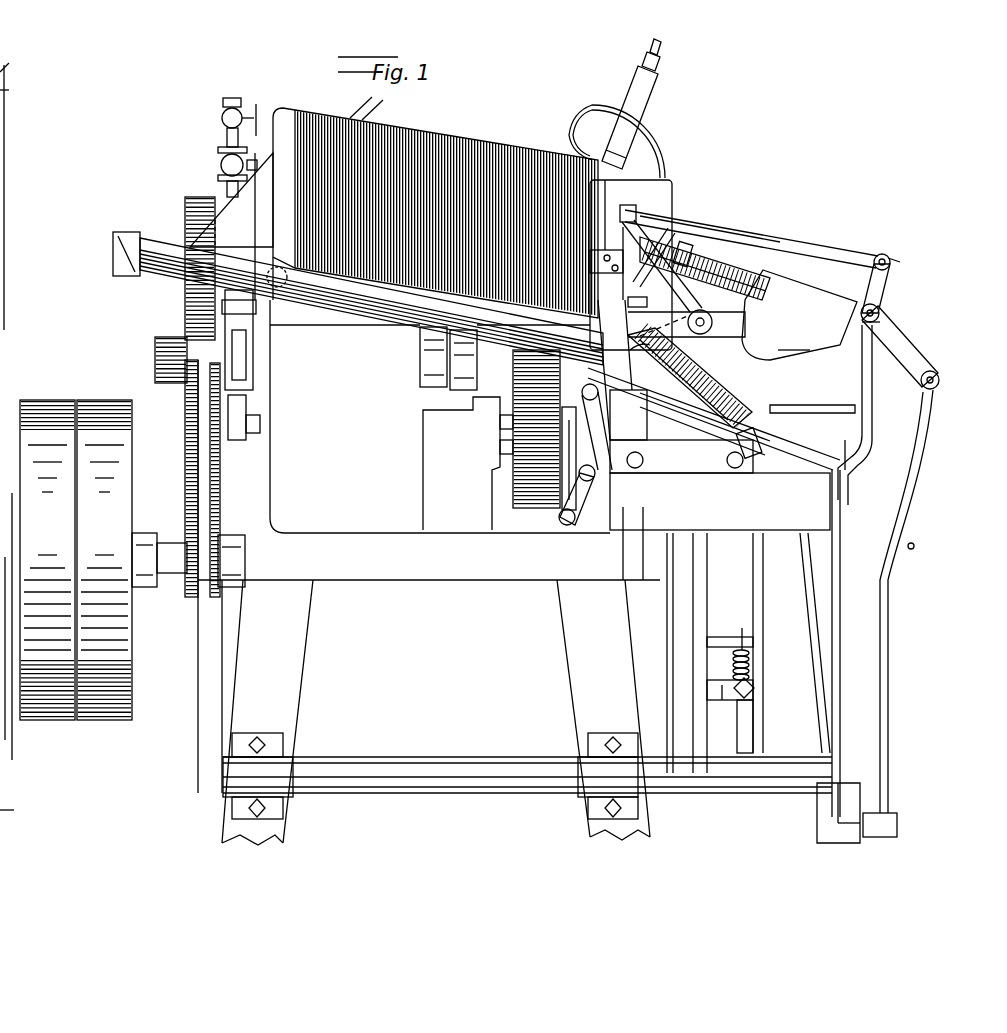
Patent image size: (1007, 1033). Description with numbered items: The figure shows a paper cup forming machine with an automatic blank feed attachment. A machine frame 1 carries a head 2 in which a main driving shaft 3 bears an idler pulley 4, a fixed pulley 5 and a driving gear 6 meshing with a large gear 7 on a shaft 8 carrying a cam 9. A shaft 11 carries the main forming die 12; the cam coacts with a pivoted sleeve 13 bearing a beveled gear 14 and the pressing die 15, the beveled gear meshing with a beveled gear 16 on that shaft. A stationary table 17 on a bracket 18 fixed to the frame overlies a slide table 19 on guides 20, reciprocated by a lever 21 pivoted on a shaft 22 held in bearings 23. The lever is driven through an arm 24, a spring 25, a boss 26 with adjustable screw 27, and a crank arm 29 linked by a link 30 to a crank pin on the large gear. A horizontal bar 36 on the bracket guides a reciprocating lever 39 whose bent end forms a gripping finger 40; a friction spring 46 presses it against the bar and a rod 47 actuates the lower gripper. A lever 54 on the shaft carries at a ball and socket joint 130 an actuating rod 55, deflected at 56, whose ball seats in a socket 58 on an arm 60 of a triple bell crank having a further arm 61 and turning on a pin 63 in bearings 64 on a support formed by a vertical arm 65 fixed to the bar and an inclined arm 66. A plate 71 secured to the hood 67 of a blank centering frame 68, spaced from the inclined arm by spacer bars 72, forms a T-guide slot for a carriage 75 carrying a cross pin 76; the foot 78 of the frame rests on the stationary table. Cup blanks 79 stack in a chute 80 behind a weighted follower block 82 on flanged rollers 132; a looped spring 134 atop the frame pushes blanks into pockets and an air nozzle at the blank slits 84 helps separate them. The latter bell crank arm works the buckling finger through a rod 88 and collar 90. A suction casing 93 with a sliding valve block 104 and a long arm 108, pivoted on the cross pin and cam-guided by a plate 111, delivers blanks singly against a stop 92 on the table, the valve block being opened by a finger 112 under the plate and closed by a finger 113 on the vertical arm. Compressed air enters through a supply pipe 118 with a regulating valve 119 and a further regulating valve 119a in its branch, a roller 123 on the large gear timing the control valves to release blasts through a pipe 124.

The machine frame 1 is at (282, 702).
The machine frame head 2 is at (440, 416).
The main driving shaft 3 is at (175, 560).
The idler pulley 4 is at (47, 560).
The pulley 5 is at (104, 560).
The driving gear 6 is at (186, 517).
The large gear 7 is at (198, 305).
The shaft 8 is at (428, 357).
The cam 9 is at (462, 363).
The shaft 11 is at (512, 430).
The main cup forming cone or die 12 is at (667, 420).
The sleeve 13 is at (385, 120).
The beveled gear 14 is at (668, 232).
The cup pressing cone or die 15 is at (690, 378).
The beveled gear 16 is at (537, 480).
The stationary inclined table 17 is at (737, 466).
The bracket 18 is at (658, 624).
The inclined slide table 19 is at (680, 410).
The guides 20 is at (638, 466).
The arm or lever 21 is at (700, 621).
The shaft 22 is at (473, 753).
The bearings 23 is at (278, 775).
The plate or arm 24 is at (753, 741).
The spring 25 is at (749, 670).
The boss 26 is at (721, 694).
The adjustable screw 27 is at (756, 689).
The crank arm 29 is at (214, 520).
The link 30 is at (166, 362).
The horizontal beam or bar 36 is at (832, 490).
The reciprocating lever 39 is at (834, 626).
The upper gripper member 40 is at (827, 443).
The friction guide spring 46 is at (840, 510).
The gripper actuating rod 47 is at (806, 592).
The arm or lever 54 is at (826, 819).
The actuating rod 55 is at (888, 714).
The deflected portion of actuating rod 56 is at (913, 547).
The socket 58 is at (939, 381).
The arm 60 is at (913, 353).
The arm 61 is at (891, 287).
The pin 63 is at (880, 312).
The bearings 64 is at (882, 325).
The vertical arm 65 is at (866, 460).
The upwardly inclined arm 66 is at (757, 277).
The hood 67 is at (657, 204).
The blank centering frame 68 is at (605, 195).
The plate 71 is at (660, 242).
The spacer bars 72 is at (760, 287).
The double arm carriage 75 is at (705, 310).
The cross pin 76 is at (712, 320).
The foot 78 is at (636, 372).
The cup blanks 79 is at (445, 178).
The inclined guideway or chute 80 is at (355, 298).
The weighted follower or block 82 is at (231, 226).
The blank slits 84 is at (626, 307).
The rod 88 is at (833, 257).
The collar 90 is at (890, 258).
The stop 92 is at (757, 440).
The housing or casing 93 is at (684, 380).
The valve block 104 is at (632, 349).
The longer arm 108 is at (732, 330).
The plate 111 is at (798, 341).
The valve operating finger 112 is at (717, 253).
The second valve operating finger 113 is at (803, 443).
The compressed air supply pipe 118 is at (222, 114).
The regulating valve 119 is at (220, 165).
The regulating valve 119a is at (227, 130).
The roller 123 is at (240, 428).
The pipe 124 is at (243, 428).
The ball and socket joint 130 is at (887, 818).
The flanged rollers 132 is at (290, 282).
The resilient looped spring 134 is at (600, 125).